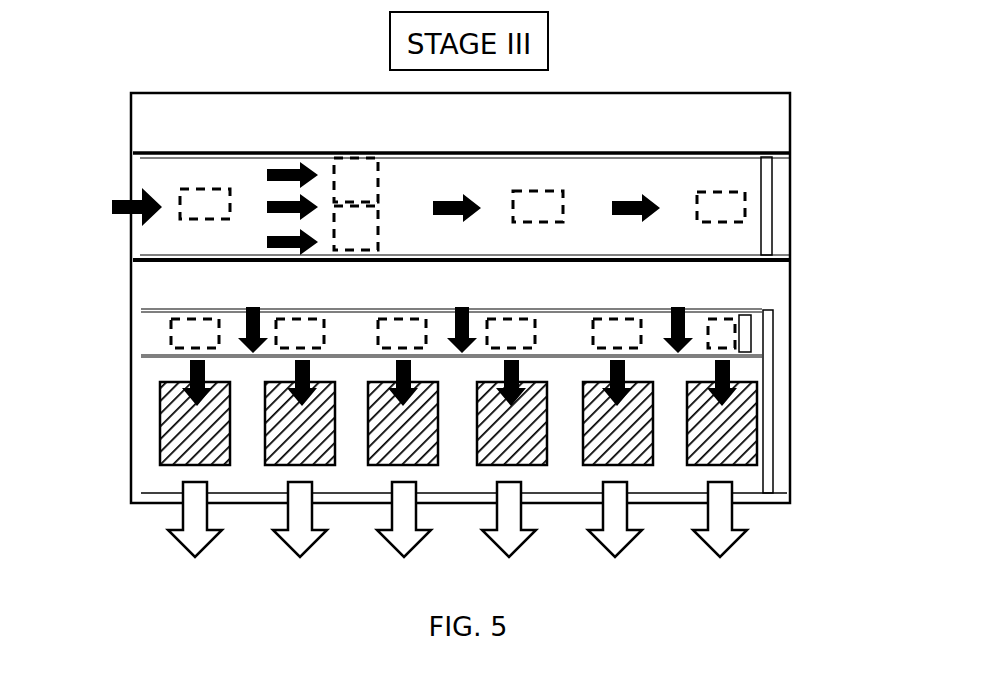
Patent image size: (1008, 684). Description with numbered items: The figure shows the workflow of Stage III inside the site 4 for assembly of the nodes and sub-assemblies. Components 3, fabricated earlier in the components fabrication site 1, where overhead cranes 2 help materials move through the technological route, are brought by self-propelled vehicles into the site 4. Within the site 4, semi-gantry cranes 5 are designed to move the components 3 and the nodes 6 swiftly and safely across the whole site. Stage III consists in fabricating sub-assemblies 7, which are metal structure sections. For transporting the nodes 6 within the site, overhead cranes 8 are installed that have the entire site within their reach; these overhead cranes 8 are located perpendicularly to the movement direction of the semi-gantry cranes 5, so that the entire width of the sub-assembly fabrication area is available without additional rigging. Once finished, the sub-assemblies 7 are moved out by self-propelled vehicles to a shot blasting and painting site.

The components fabrication site 1 is at (460, 298).
The overhead cranes 2 is at (828, 186).
The components 3 is at (130, 168).
The site for assembly of nodes and sub-assemblies 4 is at (451, 311).
The semi-gantry cranes 5 is at (817, 294).
The nodes 6 is at (120, 308).
The sub-assemblies 7 is at (392, 412).
The overhead cranes 8 is at (829, 401).